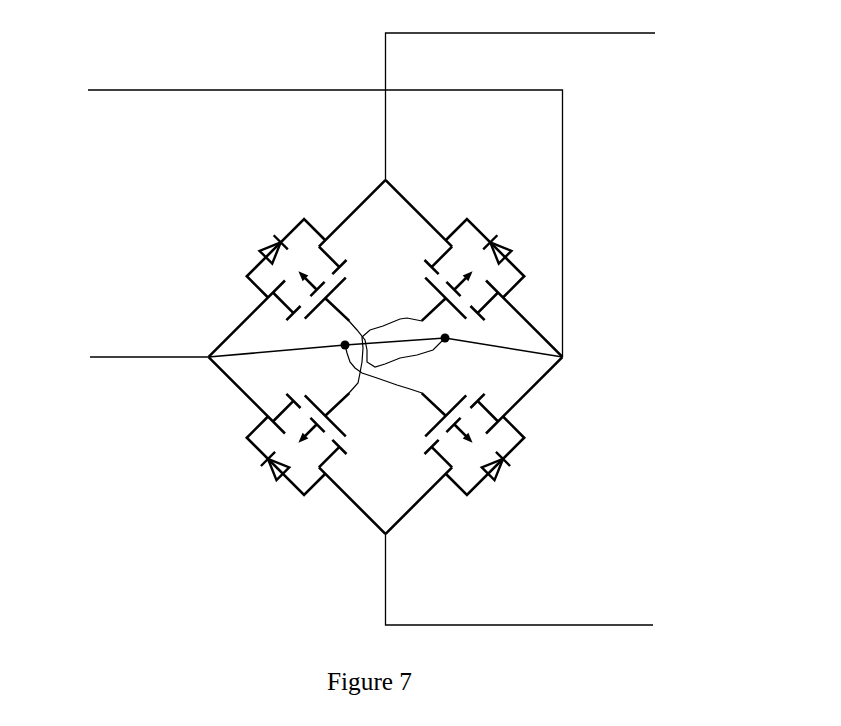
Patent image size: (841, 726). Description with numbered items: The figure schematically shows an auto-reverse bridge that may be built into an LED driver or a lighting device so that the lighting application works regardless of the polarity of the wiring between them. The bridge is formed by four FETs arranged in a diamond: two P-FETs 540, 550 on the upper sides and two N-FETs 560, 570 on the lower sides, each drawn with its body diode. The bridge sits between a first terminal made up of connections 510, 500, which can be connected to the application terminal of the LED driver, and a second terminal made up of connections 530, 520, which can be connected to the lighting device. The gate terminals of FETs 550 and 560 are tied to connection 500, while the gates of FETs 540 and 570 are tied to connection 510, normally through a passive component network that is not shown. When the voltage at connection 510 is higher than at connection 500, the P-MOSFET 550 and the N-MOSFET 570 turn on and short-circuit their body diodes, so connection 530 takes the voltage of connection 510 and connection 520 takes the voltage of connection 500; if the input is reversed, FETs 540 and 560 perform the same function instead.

The connection 500 is at (300, 353).
The connection 510 is at (300, 215).
The connection 520 is at (545, 586).
The connection 530 is at (545, 97).
The P-FET 540 is at (308, 280).
The P-FET 550 is at (461, 280).
The N-FET 560 is at (461, 433).
The N-FET 570 is at (308, 433).